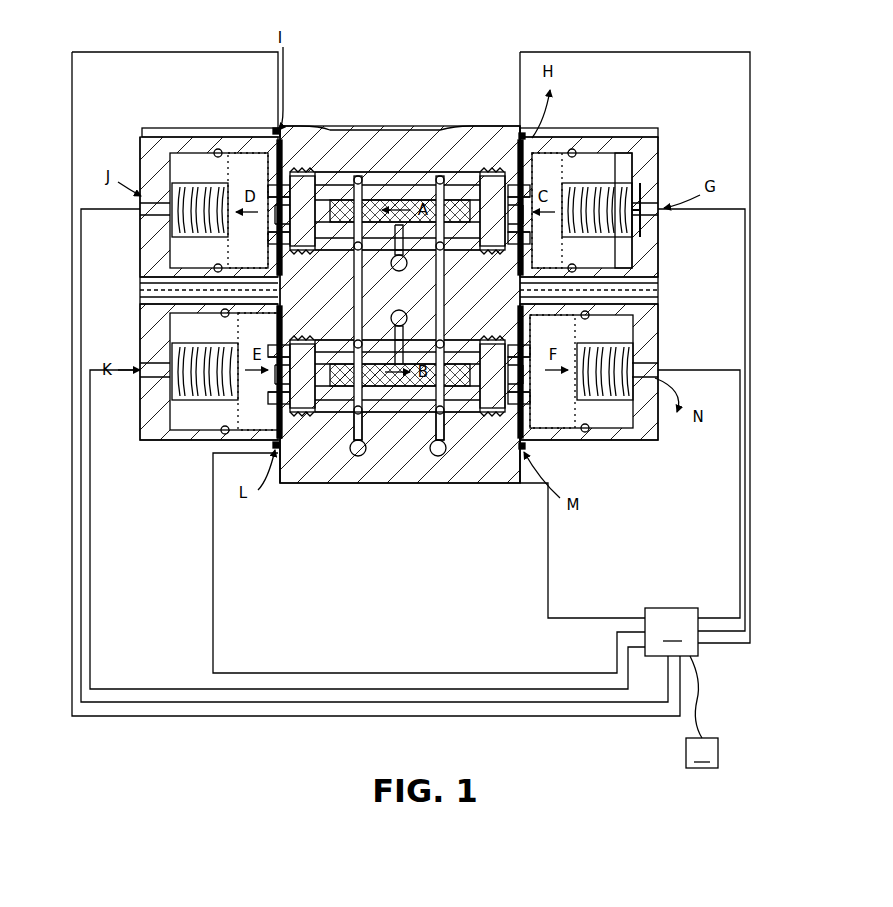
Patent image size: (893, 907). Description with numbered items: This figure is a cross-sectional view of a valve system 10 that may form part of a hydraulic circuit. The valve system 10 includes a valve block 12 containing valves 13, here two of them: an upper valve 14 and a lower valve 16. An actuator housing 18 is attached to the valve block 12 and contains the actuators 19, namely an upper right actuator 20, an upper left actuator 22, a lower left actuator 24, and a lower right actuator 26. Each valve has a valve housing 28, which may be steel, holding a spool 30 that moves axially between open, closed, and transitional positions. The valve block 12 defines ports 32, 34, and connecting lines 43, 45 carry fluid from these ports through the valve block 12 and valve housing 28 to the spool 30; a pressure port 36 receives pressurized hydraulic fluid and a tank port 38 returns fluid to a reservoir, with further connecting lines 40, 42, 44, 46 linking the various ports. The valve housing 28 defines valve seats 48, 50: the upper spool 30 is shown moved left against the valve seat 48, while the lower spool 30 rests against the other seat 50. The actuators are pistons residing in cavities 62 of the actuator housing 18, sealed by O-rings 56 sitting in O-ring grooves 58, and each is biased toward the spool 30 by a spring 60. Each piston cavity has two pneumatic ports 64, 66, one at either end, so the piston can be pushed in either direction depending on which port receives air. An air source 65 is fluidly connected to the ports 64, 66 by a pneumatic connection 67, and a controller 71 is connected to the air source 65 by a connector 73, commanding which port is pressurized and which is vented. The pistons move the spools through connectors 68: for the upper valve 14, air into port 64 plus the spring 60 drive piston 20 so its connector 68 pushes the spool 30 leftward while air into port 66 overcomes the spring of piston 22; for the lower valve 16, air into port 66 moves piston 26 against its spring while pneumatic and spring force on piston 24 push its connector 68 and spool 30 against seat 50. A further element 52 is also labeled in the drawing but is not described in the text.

The valve system 10 is at (414, 57).
The valve block 12 is at (488, 150).
The valves 13 is at (330, 155).
The upper valve 14 is at (442, 176).
The lower valve 16 is at (386, 442).
The actuator housing 18 is at (580, 133).
The actuators 19 is at (648, 246).
The upper right actuator 20 is at (560, 145).
The upper left actuator 22 is at (247, 155).
The lower left actuator 24 is at (200, 440).
The lower right actuator 26 is at (655, 445).
The valve housing 28 is at (359, 176).
The spool 30 is at (333, 168).
The port 32 is at (200, 245).
The port 34 is at (220, 300).
The pressure port 36 is at (360, 458).
The tank port 38 is at (442, 458).
The connecting line 40 is at (650, 300).
The connecting line 42 is at (190, 283).
The connecting line 43 is at (640, 282).
The connecting line 44 is at (424, 458).
The connecting line 45 is at (652, 291).
The connecting line 46 is at (333, 452).
The valve seat 48 is at (413, 166).
The valve seat 50 is at (406, 448).
The seal ring 52 is at (545, 150).
The O-rings 56 is at (582, 150).
The O-ring grooves 58 is at (574, 150).
The spring 60 is at (182, 152).
The cavities 62 is at (272, 150).
The pneumatic port 64 is at (143, 170).
The air source 65 is at (671, 632).
The pneumatic port 66 is at (276, 128).
The pneumatic connection 67 is at (730, 630).
The connectors 68 is at (294, 170).
The controller 71 is at (702, 753).
The connector 73 is at (705, 706).